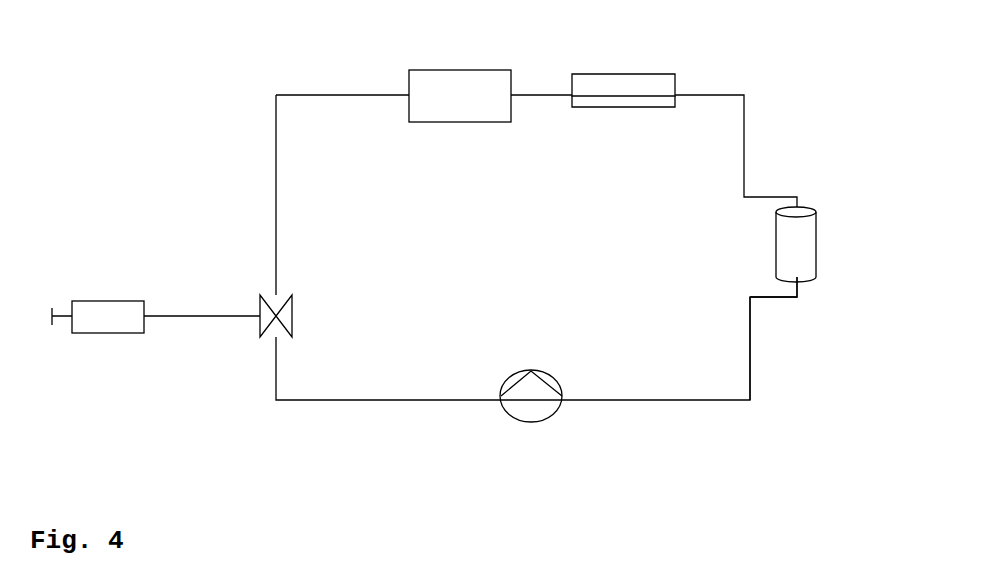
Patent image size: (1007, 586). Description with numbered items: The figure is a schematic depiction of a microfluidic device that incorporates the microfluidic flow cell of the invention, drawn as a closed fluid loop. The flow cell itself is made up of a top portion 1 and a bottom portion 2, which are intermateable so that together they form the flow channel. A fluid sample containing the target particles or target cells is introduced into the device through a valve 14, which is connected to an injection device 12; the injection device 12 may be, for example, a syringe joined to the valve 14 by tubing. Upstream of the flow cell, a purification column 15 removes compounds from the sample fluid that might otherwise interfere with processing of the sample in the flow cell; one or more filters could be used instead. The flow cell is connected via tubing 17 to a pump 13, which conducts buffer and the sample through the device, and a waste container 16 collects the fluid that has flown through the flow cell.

The top portion 1 is at (680, 82).
The bottom portion 2 is at (673, 113).
The injection device 12 is at (98, 347).
The pump 13 is at (531, 421).
The valve 14 is at (314, 316).
The purification column 15 is at (460, 69).
The waste container 16 is at (832, 244).
The tubing 17 is at (766, 360).